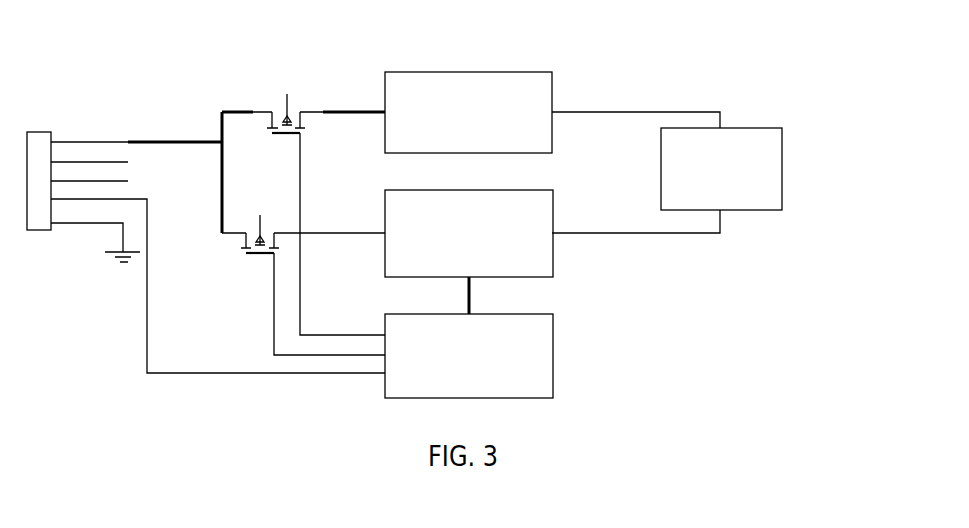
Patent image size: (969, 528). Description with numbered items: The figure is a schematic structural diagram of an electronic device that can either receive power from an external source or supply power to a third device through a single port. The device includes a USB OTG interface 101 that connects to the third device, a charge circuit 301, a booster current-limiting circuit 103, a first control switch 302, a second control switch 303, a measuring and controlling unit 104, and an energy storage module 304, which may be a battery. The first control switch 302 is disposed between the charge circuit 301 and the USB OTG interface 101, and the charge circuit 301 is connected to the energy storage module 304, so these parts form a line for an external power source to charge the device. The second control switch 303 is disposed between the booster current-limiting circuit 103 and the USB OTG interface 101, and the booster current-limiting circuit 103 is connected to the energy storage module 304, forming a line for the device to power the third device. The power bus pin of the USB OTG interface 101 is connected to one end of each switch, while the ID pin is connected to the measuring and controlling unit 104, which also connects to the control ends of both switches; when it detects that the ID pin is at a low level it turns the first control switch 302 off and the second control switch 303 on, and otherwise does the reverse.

The USB OTG interface 101 is at (39, 132).
The first control switch 302 is at (270, 95).
The second control switch 303 is at (245, 256).
The charge circuit 301 is at (552, 72).
The booster current-limiting circuit 103 is at (553, 190).
The measuring and controlling unit 104 is at (553, 314).
The energy storage module 304 is at (782, 128).